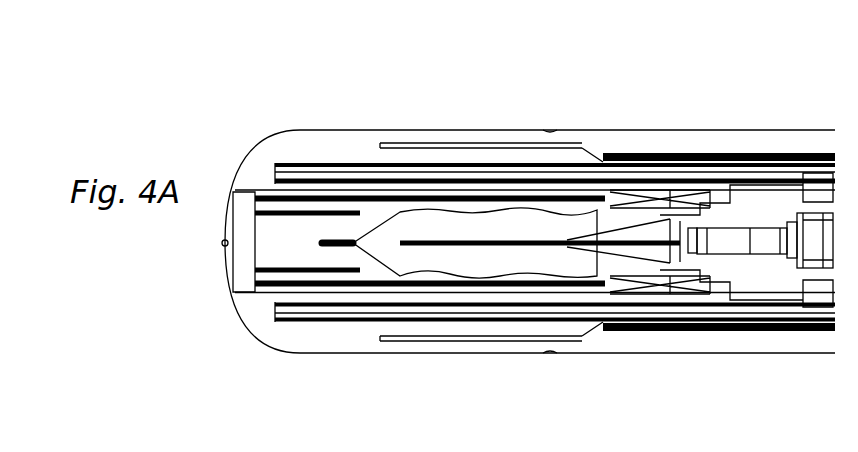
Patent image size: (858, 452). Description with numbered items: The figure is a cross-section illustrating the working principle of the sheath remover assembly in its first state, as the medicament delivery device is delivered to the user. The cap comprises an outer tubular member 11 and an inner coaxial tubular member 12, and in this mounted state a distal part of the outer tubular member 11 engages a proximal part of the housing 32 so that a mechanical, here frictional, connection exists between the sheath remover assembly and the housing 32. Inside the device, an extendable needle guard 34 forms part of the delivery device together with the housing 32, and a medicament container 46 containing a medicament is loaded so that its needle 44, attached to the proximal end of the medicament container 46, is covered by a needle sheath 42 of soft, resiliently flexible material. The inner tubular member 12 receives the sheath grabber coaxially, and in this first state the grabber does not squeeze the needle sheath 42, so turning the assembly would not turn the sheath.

The outer tubular member 11 is at (358, 137).
The inner tubular member 12 is at (523, 183).
The housing 32 is at (606, 158).
The extendable needle guard 34 is at (281, 138).
The needle sheath 42 is at (465, 220).
The needle 44 is at (465, 247).
The medicament container 46 is at (785, 257).